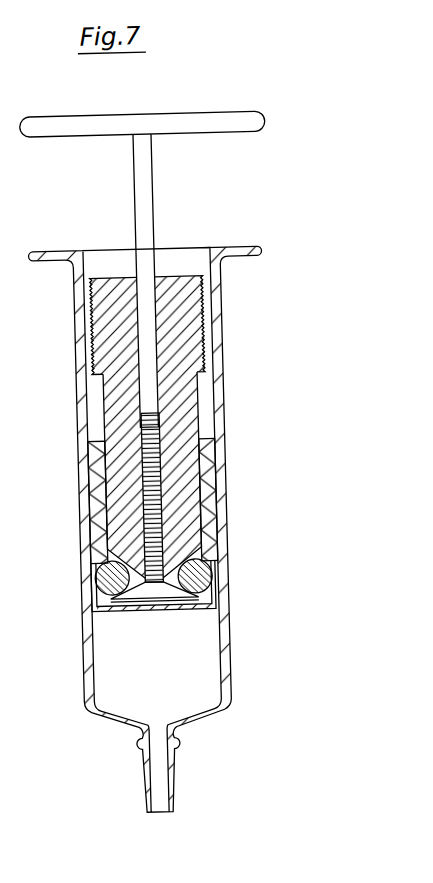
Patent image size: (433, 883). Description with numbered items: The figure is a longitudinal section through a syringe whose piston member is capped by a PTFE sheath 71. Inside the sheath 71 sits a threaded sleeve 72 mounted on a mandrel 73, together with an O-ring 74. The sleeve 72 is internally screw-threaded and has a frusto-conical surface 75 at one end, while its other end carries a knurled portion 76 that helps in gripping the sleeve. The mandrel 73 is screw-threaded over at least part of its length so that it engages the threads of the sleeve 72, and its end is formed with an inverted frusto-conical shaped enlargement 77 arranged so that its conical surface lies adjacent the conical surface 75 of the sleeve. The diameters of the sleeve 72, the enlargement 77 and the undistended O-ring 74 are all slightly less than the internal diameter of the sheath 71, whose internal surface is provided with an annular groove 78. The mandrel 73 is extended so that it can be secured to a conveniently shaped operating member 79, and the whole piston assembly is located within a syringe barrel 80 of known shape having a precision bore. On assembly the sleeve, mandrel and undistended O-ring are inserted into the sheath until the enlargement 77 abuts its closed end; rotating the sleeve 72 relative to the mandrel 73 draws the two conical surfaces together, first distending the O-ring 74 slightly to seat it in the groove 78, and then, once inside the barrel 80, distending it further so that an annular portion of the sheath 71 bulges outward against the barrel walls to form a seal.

The PTFE sheath 71 is at (202, 464).
The threaded sleeve 72 is at (112, 409).
The mandrel 73 is at (148, 323).
The O-ring 74 is at (199, 573).
The frusto-conical surface 75 is at (94, 577).
The knurled portion 76 is at (208, 350).
The frusto-conical shaped enlargement 77 is at (168, 598).
The annular groove 78 is at (98, 596).
The operating member 79 is at (172, 126).
The syringe barrel 80 is at (221, 289).